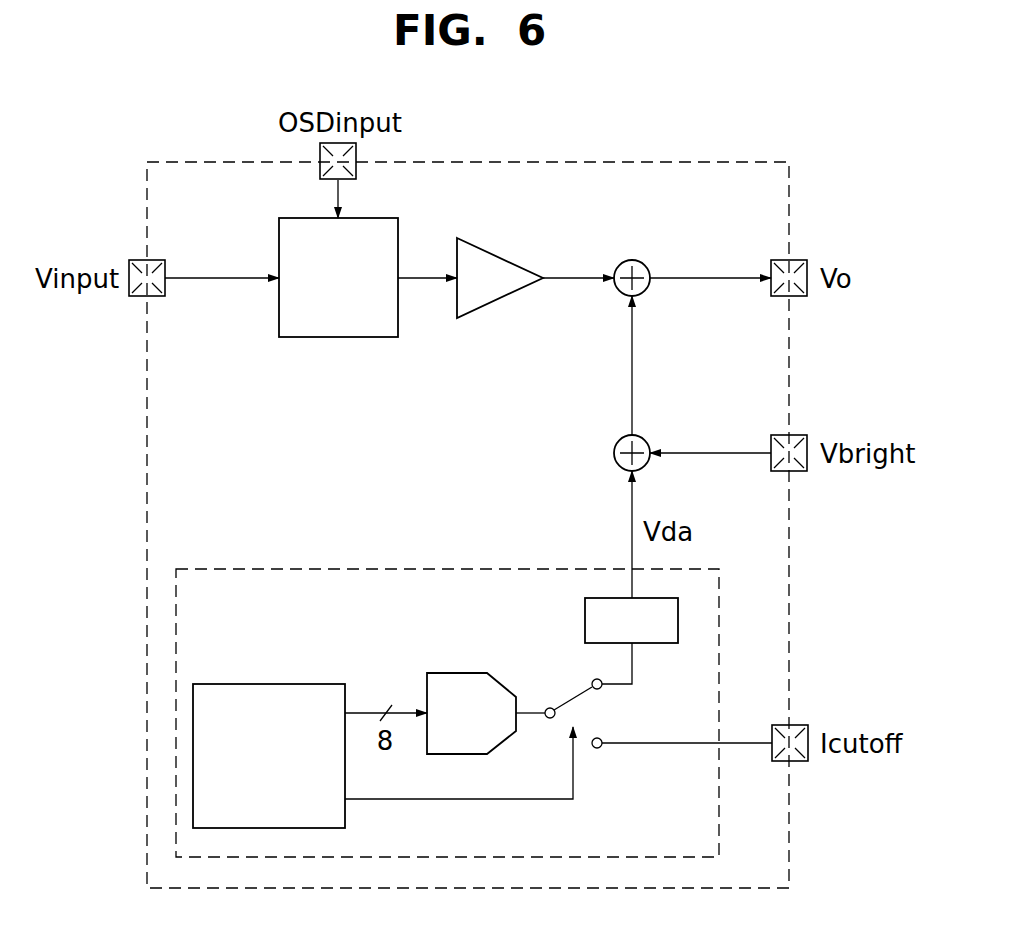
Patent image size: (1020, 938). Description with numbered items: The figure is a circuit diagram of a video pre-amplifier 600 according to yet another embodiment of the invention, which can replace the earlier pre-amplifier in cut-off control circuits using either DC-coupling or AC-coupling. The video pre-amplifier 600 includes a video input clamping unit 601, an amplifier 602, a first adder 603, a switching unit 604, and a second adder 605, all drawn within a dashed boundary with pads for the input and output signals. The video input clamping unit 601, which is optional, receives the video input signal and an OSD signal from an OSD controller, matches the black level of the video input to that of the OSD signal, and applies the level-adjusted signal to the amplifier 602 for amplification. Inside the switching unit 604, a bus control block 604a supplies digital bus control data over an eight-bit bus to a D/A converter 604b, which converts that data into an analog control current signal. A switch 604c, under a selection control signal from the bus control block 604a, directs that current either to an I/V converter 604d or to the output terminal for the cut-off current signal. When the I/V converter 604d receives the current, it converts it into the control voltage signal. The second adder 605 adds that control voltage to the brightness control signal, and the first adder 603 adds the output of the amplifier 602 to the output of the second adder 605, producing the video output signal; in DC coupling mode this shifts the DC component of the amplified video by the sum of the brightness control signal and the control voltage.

The video pre-amplifier 600 is at (789, 180).
The video input clamping unit 601 is at (340, 337).
The amplifier 602 is at (490, 250).
The first adder 603 is at (632, 260).
The switching unit 604 is at (367, 569).
The bus control block 604a is at (281, 684).
The digital-to-analog (D/A) converter 604b is at (460, 673).
The switch 604c is at (549, 720).
The I/V converter 604d is at (648, 643).
The second adder 605 is at (614, 453).